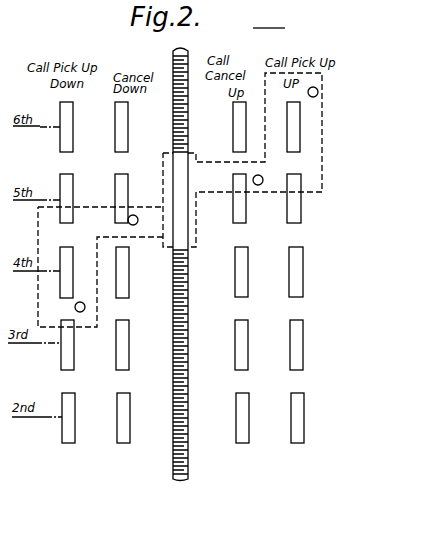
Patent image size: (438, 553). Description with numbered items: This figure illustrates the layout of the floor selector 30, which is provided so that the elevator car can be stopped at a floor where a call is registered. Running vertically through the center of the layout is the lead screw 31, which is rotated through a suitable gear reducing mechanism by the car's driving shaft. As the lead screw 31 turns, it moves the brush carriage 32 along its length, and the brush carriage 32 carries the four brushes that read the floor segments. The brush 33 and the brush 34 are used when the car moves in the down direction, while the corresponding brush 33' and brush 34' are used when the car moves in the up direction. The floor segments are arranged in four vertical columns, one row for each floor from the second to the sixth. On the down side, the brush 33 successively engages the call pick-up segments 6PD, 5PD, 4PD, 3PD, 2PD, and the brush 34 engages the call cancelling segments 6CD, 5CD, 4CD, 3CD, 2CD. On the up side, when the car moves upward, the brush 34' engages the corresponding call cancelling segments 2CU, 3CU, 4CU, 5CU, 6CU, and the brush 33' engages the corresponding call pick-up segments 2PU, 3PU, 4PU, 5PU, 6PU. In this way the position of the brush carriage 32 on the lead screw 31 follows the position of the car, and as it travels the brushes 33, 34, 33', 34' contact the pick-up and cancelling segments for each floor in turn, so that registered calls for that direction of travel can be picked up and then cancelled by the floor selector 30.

The floor selector 30 is at (269, 20).
The lead screw 31 is at (174, 50).
The brush carriage 32 is at (205, 167).
The brush 33 is at (100, 267).
The brush 33' is at (332, 90).
The brush 34 is at (145, 220).
The brush 34' is at (271, 171).
The call pick-up segment 6PD is at (73, 121).
The call cancelling segment 6CD is at (128, 121).
The call cancelling segment 6CU is at (233, 118).
The call pick-up segment 6PU is at (300, 118).
The call pick-up segment 5PD is at (73, 191).
The call cancelling segment 5CD is at (128, 191).
The call cancelling segment 5CU is at (246, 218).
The call pick-up segment 5PU is at (302, 213).
The call pick-up segment 4PD is at (85, 244).
The call cancelling segment 4CD is at (129, 293).
The call cancelling segment 4CU is at (248, 295).
The call pick-up segment 4PU is at (303, 292).
The call pick-up segment 3PD is at (74, 361).
The call cancelling segment 3CD is at (129, 360).
The call cancelling segment 3CU is at (248, 360).
The call pick-up segment 3PU is at (303, 358).
The call pick-up segment 2PD is at (75, 441).
The call cancelling segment 2CD is at (130, 440).
The call cancelling segment 2CU is at (249, 440).
The call pick-up segment 2PU is at (304, 434).